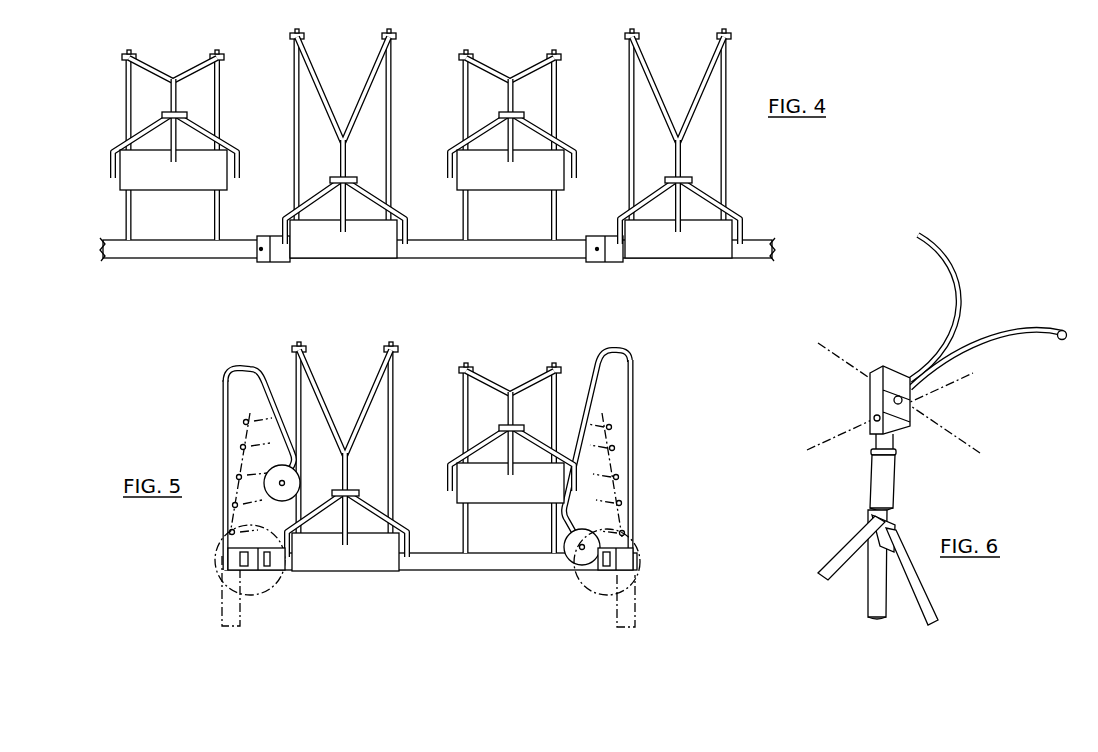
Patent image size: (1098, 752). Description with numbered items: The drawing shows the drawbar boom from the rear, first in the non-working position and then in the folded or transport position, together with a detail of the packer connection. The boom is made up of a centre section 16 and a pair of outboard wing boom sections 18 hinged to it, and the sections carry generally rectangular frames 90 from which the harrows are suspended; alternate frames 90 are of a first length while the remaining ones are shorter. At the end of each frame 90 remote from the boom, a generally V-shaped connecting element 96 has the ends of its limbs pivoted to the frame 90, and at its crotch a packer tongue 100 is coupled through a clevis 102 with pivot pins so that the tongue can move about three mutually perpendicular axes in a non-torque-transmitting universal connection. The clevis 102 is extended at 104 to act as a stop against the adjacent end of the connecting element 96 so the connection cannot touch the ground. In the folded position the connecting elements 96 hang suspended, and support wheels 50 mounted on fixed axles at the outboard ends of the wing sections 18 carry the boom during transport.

In FIG. 4, the centre section 16 is at (505, 256).
In FIG. 4, the wing boom sections 18 is at (212, 252).
In FIG. 5, the support wheels 50 is at (268, 587).
In FIG. 4, the rectangular frames 90 is at (558, 104).
In FIG. 5, the rectangular frames 90 is at (393, 441).
In FIG. 4, the connecting element 96 is at (367, 88).
In FIG. 5, the connecting element 96 is at (374, 396).
In FIG. 6, the connecting element 96 is at (988, 311).
In FIG. 4, the packer tongue 100 is at (563, 151).
In FIG. 5, the packer tongue 100 is at (384, 500).
In FIG. 6, the packer tongue 100 is at (907, 402).
In FIG. 6, the clevis 102 is at (907, 430).
In FIG. 6, the stop extension 104 is at (878, 373).